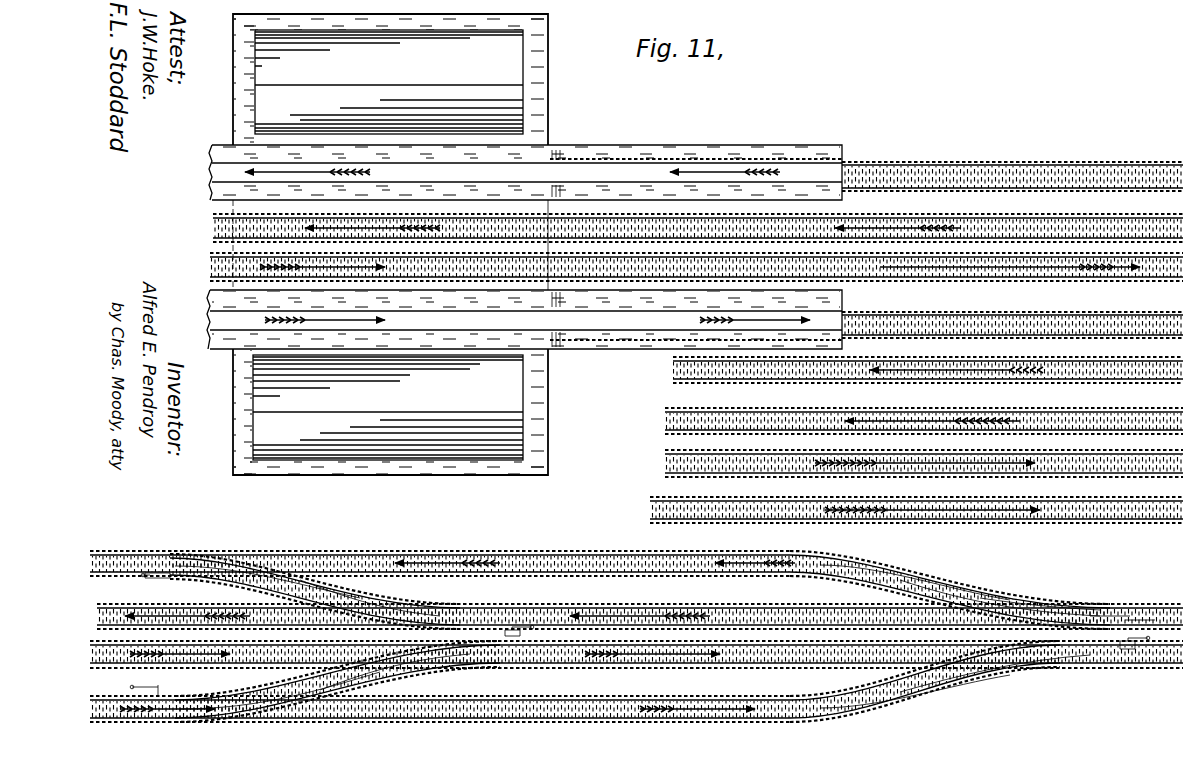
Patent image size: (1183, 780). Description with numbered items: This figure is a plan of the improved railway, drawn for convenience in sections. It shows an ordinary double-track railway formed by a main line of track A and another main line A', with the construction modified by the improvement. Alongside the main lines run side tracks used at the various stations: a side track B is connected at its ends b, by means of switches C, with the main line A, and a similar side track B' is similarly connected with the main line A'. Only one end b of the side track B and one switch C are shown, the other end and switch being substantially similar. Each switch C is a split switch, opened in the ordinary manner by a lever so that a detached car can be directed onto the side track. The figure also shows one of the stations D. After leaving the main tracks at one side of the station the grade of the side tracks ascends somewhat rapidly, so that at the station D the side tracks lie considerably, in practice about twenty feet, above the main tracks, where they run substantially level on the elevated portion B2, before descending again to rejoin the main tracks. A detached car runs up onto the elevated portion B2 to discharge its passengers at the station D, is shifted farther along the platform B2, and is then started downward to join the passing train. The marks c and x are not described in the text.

The main line of track A is at (640, 420).
The main line A' is at (636, 469).
The side track B is at (636, 385).
The side track B' is at (636, 517).
The elevated portion of the side track B2 is at (524, 247).
The switch C is at (635, 638).
The station D is at (390, 244).
The end of the side track b is at (1040, 594).
The switch frog c is at (1125, 619).
The switch stand x is at (834, 634).